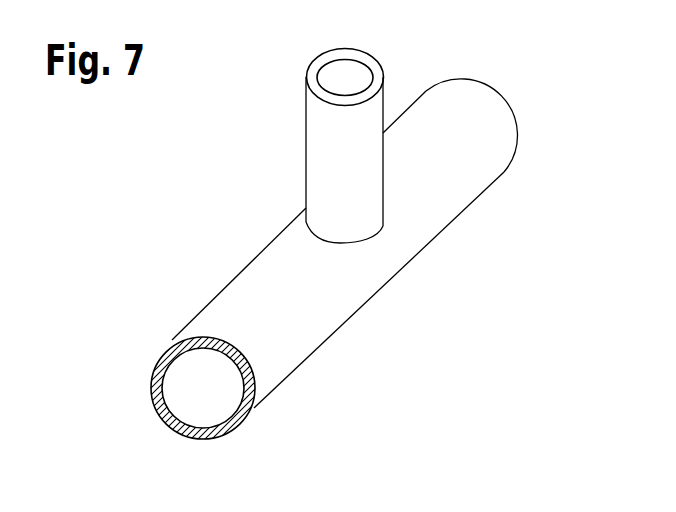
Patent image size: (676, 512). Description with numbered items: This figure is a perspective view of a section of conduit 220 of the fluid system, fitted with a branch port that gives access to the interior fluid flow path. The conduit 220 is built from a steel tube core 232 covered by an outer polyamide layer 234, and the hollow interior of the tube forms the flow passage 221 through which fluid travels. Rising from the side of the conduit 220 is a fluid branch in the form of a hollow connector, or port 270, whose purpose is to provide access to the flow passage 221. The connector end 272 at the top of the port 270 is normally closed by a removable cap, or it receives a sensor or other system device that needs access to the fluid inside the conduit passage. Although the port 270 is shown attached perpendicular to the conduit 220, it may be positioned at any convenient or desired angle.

The conduit 220 is at (362, 308).
The flow passage 221 is at (178, 369).
The steel tube core 232 is at (255, 397).
The outer polyamide layer 234 is at (457, 193).
The port 270 is at (386, 96).
The connector end 272 is at (312, 123).